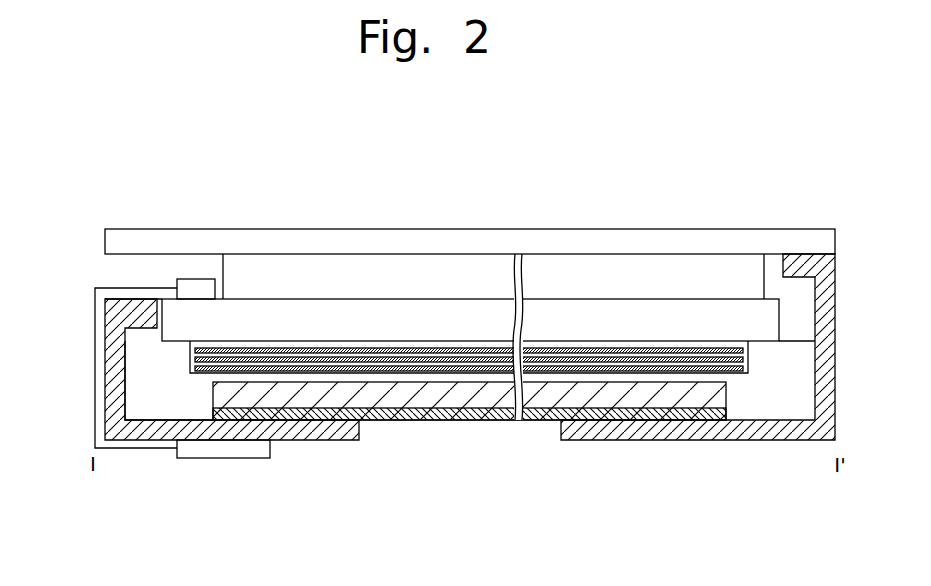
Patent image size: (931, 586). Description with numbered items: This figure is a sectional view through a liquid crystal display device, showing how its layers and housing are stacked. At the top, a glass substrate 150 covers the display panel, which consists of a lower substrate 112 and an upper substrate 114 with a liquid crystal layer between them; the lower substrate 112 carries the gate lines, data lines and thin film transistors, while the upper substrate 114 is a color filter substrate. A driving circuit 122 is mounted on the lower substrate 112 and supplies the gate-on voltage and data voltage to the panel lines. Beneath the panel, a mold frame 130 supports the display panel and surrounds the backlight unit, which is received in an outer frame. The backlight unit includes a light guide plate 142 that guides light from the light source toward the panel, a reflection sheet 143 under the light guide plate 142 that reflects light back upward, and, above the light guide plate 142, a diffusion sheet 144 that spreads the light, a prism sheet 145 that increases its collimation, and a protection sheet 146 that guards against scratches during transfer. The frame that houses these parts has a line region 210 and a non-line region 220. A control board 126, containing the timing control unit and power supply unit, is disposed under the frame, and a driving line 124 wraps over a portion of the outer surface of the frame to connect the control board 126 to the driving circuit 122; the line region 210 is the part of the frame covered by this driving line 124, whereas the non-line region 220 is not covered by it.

The glass substrate 150 is at (458, 240).
The line region 210 is at (148, 430).
The non-line region 220 is at (763, 432).
The driving line 124 is at (95, 348).
The driving circuit 122 is at (195, 285).
The control board 126 is at (222, 455).
The upper substrate 114 is at (373, 265).
The lower substrate 112 is at (275, 315).
The mold frame 130 is at (138, 390).
The protection sheet 146 is at (487, 352).
The prism sheet 145 is at (440, 362).
The diffusion sheet 144 is at (392, 373).
The light guide plate 142 is at (340, 395).
The reflection sheet 143 is at (288, 417).